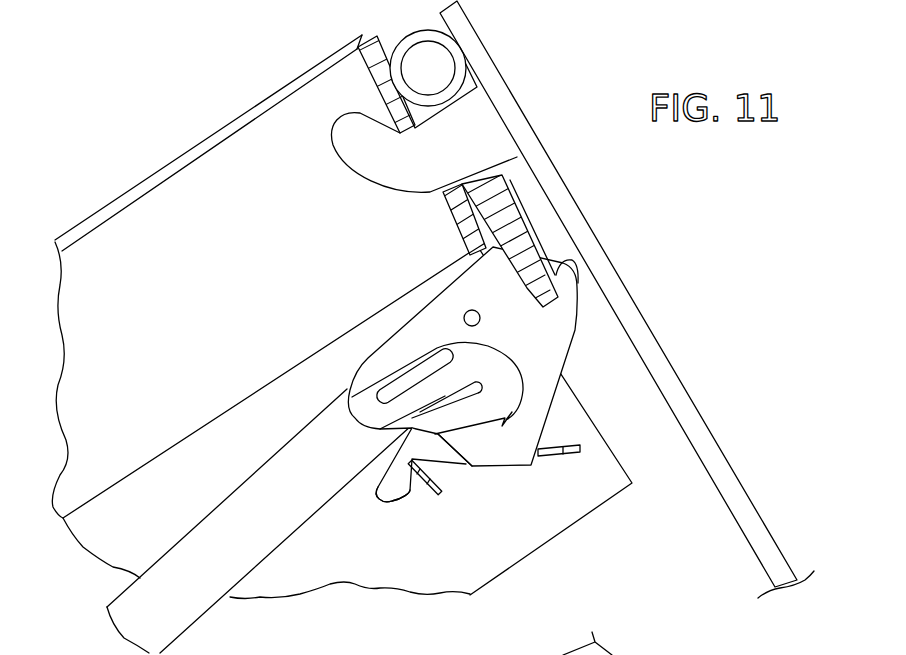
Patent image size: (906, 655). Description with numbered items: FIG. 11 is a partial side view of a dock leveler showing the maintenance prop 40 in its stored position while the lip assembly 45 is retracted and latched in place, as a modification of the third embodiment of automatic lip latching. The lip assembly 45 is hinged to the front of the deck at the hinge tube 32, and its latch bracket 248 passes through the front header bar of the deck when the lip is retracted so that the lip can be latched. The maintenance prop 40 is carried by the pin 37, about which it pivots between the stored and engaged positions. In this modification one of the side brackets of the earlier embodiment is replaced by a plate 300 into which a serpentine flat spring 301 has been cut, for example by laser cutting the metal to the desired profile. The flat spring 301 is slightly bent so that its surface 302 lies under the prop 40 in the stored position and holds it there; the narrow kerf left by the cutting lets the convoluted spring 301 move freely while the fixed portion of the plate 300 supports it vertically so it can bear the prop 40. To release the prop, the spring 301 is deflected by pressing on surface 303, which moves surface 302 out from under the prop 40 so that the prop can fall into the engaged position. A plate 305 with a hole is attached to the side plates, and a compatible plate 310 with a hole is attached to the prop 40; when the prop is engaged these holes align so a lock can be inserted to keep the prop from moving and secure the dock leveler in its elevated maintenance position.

The hinge tube 32 is at (457, 43).
The pin 37 is at (474, 322).
The maintenance prop 40 is at (207, 607).
The lip assembly 45 is at (718, 445).
The latch bracket 248 is at (347, 133).
The plate 300 is at (566, 358).
The serpentine flat spring 301 is at (503, 390).
The surface 302 is at (465, 468).
The surface 303 is at (393, 492).
The plate 305 is at (581, 448).
The plate 310 is at (441, 496).